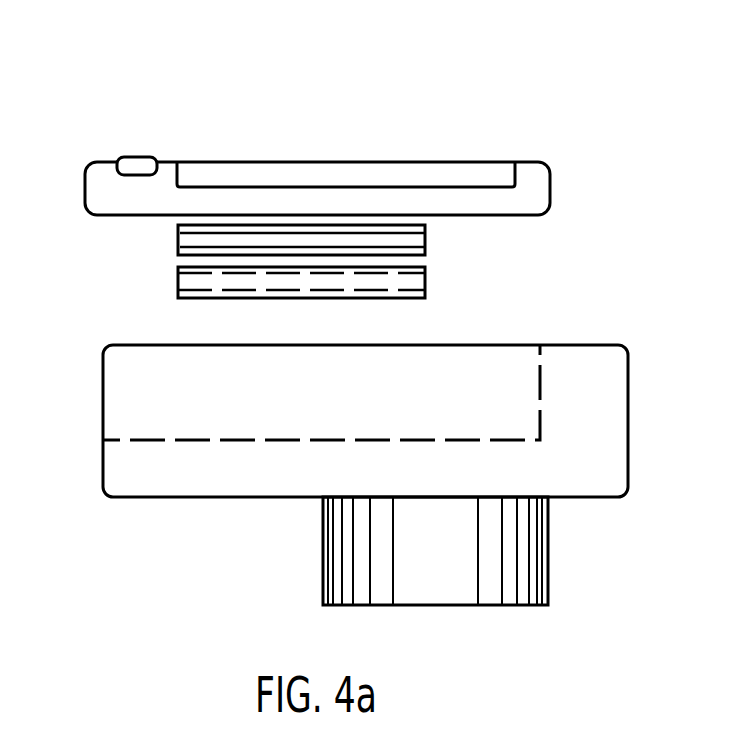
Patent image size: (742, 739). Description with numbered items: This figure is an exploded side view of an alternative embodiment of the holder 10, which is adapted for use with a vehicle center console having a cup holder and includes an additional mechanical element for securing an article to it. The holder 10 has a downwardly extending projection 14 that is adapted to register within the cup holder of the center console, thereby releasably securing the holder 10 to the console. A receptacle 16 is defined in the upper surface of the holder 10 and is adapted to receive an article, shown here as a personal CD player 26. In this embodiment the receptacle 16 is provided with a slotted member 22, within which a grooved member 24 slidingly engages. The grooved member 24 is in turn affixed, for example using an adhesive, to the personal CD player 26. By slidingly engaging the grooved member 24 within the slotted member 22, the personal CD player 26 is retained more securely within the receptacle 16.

The holder 10 is at (241, 516).
The projection 14 is at (548, 557).
The receptacle 16 is at (374, 407).
The slotted member 22 is at (427, 282).
The grooved member 24 is at (427, 240).
The personal CD player 26 is at (535, 177).